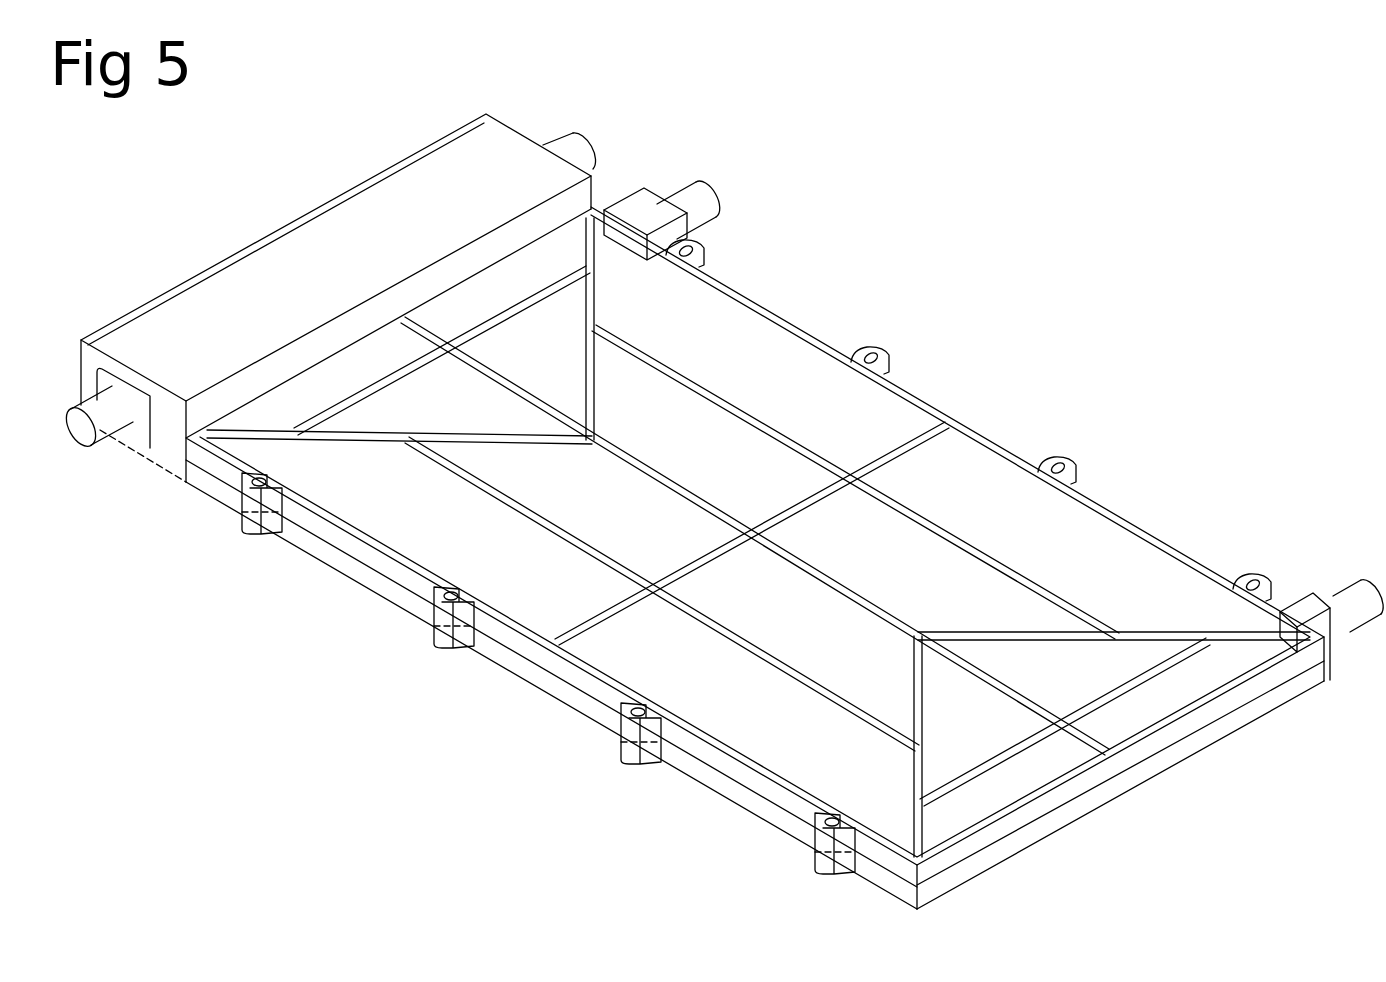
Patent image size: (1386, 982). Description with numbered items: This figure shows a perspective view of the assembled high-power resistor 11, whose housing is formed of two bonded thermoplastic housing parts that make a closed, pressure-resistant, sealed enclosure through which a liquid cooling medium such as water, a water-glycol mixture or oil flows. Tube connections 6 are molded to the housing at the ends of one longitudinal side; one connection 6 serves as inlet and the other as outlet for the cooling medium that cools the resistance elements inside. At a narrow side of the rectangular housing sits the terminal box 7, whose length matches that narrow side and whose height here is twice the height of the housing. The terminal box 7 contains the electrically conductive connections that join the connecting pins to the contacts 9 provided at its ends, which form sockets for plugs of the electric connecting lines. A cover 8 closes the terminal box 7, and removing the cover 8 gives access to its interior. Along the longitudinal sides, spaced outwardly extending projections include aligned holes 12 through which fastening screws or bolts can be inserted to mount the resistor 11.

The connection 6 is at (697, 203).
The terminal box 7 is at (170, 455).
The cover 8 is at (313, 208).
The contact 9 is at (120, 433).
The high-power resistor 11 is at (1132, 778).
The hole 12 is at (825, 821).